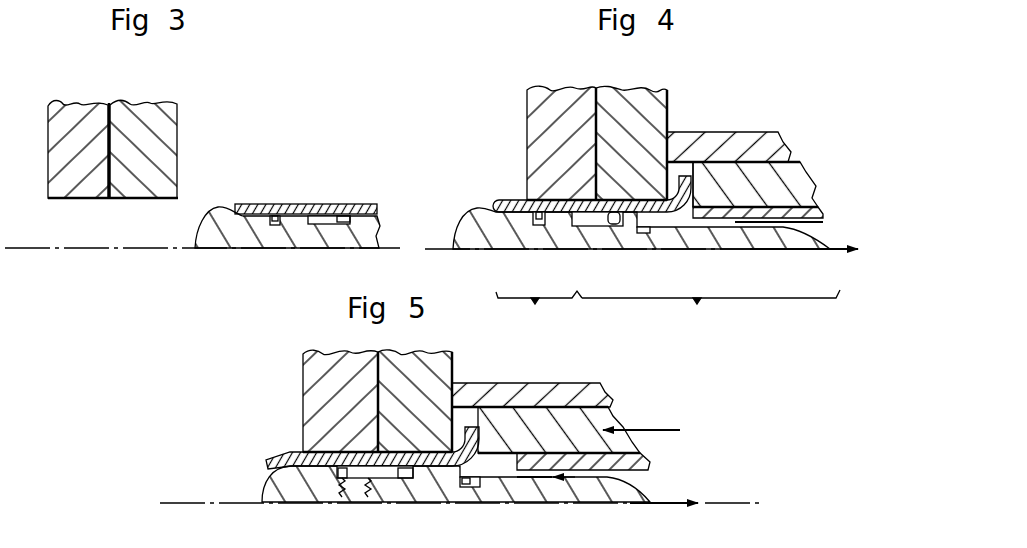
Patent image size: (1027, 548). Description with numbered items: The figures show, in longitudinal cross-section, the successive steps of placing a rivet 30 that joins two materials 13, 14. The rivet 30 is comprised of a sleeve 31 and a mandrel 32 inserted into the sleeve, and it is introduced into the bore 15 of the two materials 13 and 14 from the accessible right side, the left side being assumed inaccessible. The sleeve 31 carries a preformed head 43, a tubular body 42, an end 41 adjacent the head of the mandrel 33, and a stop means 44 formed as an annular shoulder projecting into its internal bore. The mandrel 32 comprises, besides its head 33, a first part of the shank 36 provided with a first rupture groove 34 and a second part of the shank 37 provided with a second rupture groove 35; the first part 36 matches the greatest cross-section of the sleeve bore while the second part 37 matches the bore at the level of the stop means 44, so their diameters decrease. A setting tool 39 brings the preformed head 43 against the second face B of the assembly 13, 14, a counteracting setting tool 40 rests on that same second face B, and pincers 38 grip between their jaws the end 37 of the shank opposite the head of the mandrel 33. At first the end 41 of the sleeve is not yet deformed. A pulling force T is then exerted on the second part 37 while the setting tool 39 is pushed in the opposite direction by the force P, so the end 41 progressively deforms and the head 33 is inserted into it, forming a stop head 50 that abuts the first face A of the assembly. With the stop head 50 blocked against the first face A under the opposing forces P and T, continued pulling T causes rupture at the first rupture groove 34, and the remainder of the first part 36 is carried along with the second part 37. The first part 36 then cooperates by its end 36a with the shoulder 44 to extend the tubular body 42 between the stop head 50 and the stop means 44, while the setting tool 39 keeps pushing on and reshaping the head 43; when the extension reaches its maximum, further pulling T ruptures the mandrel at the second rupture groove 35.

In FIG. 3, the material 13 is at (80, 112).
In FIG. 5, the material 13 is at (333, 368).
In FIG. 3, the material 14 is at (150, 112).
In FIG. 5, the material 14 is at (420, 365).
In FIG. 3, the bore 15 is at (150, 215).
In FIG. 3, the rivet 30 is at (324, 181).
In FIG. 3, the sleeve 31 is at (330, 208).
In FIG. 3, the mandrel 32 is at (203, 235).
In FIG. 4, the mandrel 32 is at (492, 255).
In FIG. 3, the head of the mandrel 33 is at (235, 228).
In FIG. 4, the head of the mandrel 33 is at (483, 212).
In FIG. 5, the head of the mandrel 33 is at (268, 488).
In FIG. 3, the first rupture groove 34 is at (277, 225).
In FIG. 4, the first rupture groove 34 is at (541, 226).
In FIG. 5, the first rupture groove 34 is at (345, 498).
In FIG. 4, the second rupture groove 35 is at (646, 233).
In FIG. 5, the second rupture groove 35 is at (471, 484).
In FIG. 4, the first part of the shank 36 is at (539, 311).
In FIG. 5, the end of the first portion of the mandrel 36a is at (402, 470).
In FIG. 4, the second part of the shank 37 is at (711, 311).
In FIG. 4, the pincers 38 is at (822, 213).
In FIG. 5, the pincers 38 is at (633, 462).
In FIG. 4, the setting tool 39 is at (793, 176).
In FIG. 5, the setting tool 39 is at (608, 416).
In FIG. 4, the counteracting setting tool 40 is at (748, 140).
In FIG. 5, the counteracting setting tool 40 is at (593, 393).
In FIG. 4, the end of the sleeve 41 is at (589, 128).
In FIG. 5, the end of the sleeve 41 is at (350, 471).
In FIG. 4, the tubular body of the sleeve 42 is at (590, 198).
In FIG. 5, the tubular body of the sleeve 42 is at (353, 470).
In FIG. 4, the preformed head 43 is at (682, 160).
In FIG. 4, the stop means 44 is at (612, 224).
In FIG. 5, the stop means 44 is at (412, 480).
In FIG. 5, the stop head 50 is at (256, 482).
In FIG. 3, the first face A is at (48, 152).
In FIG. 4, the first face A is at (527, 125).
In FIG. 5, the first face A is at (303, 395).
In FIG. 3, the second face B is at (178, 155).
In FIG. 4, the second face B is at (667, 112).
In FIG. 5, the second face B is at (452, 380).
In FIG. 4, the pulling force T is at (804, 266).
In FIG. 5, the pulling force T is at (664, 518).
In FIG. 5, the pushing force P is at (649, 434).